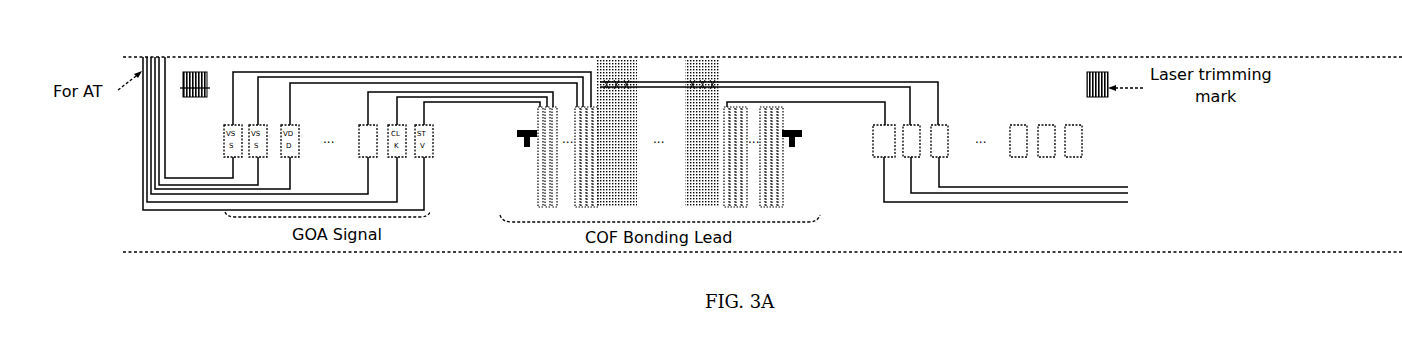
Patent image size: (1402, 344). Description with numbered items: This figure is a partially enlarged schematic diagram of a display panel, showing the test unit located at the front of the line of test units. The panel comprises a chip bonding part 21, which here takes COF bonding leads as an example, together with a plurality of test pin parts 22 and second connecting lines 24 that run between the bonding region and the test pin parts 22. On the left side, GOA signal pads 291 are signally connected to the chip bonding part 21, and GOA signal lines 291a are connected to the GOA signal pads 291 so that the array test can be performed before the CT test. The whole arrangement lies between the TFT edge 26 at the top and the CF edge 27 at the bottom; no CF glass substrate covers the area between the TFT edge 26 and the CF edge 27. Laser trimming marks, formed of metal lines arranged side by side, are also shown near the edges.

The TFT edge 26 is at (747, 42).
The CF edge 27 is at (749, 238).
The GOA signal pad 291 is at (362, 125).
The GOA signal line 291a is at (142, 97).
The chip bonding part 21 is at (603, 100).
The second connecting line 24 is at (757, 80).
The test pin part 22 is at (873, 125).